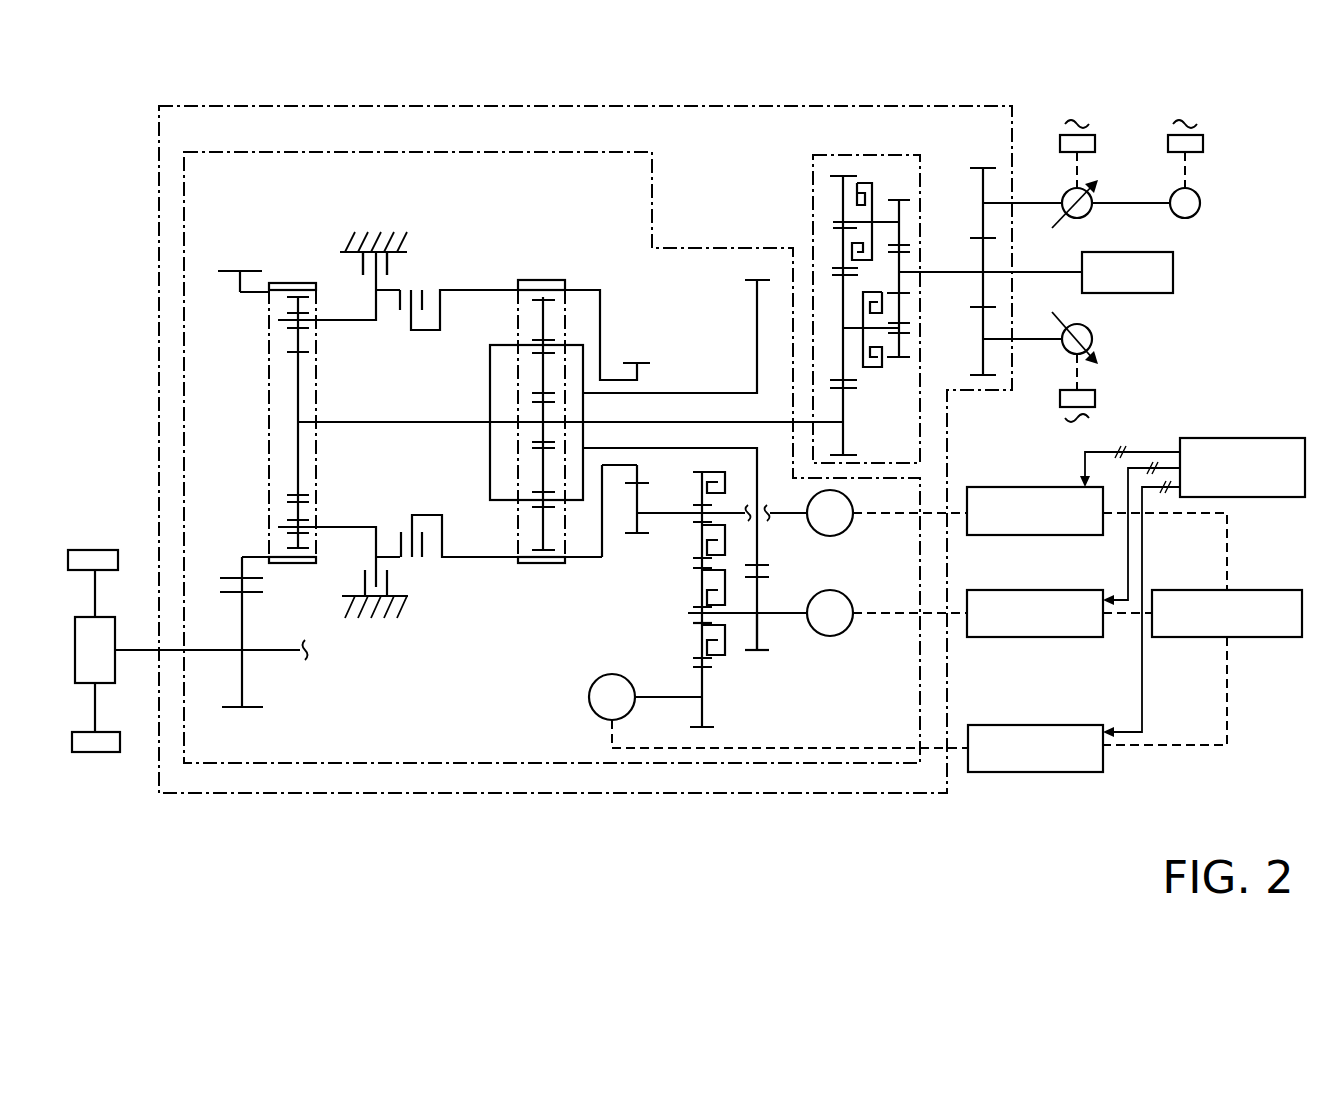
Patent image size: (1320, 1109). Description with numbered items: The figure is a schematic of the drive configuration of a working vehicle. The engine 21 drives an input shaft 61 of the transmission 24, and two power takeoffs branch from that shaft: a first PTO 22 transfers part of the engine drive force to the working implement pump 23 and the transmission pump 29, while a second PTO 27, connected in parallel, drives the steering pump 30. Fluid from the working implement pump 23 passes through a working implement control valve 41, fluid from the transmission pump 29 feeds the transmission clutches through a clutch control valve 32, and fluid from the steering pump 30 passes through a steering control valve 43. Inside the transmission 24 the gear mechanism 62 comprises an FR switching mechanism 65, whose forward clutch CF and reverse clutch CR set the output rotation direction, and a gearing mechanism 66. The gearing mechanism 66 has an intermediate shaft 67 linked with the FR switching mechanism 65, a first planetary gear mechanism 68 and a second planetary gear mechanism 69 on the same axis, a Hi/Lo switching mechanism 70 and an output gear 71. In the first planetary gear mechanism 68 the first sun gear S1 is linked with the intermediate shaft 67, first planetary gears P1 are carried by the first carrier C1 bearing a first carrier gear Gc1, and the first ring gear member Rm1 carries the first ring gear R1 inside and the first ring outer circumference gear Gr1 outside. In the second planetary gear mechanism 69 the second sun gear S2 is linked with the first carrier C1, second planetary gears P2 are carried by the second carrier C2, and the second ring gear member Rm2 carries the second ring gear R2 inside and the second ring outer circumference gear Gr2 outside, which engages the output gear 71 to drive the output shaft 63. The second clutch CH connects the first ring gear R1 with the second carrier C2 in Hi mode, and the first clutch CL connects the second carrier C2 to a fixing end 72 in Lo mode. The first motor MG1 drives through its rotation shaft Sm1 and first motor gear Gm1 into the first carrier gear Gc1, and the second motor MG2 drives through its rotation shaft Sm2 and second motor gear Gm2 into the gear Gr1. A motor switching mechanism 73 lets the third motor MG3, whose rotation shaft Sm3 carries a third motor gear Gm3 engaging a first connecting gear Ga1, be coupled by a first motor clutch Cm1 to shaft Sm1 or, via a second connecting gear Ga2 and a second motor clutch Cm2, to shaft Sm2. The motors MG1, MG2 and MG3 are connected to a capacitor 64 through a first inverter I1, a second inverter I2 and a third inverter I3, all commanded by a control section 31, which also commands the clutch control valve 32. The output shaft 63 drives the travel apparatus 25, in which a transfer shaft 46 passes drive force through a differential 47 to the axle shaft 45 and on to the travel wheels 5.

The travel wheel 5 is at (102, 550).
The engine 21 is at (1160, 293).
The first power takeoff mechanism 22 is at (977, 168).
The working implement pump 23 is at (1090, 210).
The transmission 24 is at (1012, 125).
The travel apparatus 25 is at (168, 621).
The second power takeoff mechanism 27 is at (982, 372).
The transmission pump 29 is at (1195, 215).
The steering pump 30 is at (1090, 348).
The control section 31 is at (1262, 497).
The clutch control valve 32 is at (1203, 142).
The working implement control valve 41 is at (1095, 142).
The steering control valve 43 is at (1095, 397).
The axle shaft 45 is at (97, 587).
The transfer shaft 46 is at (132, 655).
The differential gear 47 is at (75, 653).
The input shaft 61 is at (948, 272).
The gear mechanism 62 is at (810, 295).
The output shaft 63 is at (228, 707).
The capacitor 64 is at (1258, 637).
The FR switching mechanism 65 is at (820, 191).
The gearing mechanism 66 is at (799, 286).
The intermediate shaft 67 is at (782, 426).
The first planetary gear mechanism 68 is at (604, 435).
The second planetary gear mechanism 69 is at (517, 393).
The Hi/Lo switching mechanism 70 is at (501, 359).
The output gear 71 is at (242, 618).
The fixing end 72 is at (395, 218).
The motor switching mechanism 73 is at (722, 668).
The forward clutch CF is at (868, 183).
The reverse clutch CR is at (877, 370).
The first clutch CL is at (387, 275).
The second clutch CH is at (425, 297).
The first ring gear R1 is at (543, 280).
The first planetary gears P1 is at (540, 471).
The first sun gear S1 is at (543, 414).
The first carrier C1 is at (687, 393).
The first ring gear member Rm1 is at (600, 308).
The second ring gear R2 is at (308, 283).
The second planetary gears P2 is at (290, 338).
The second sun gear S2 is at (298, 399).
The second carrier C2 is at (355, 323).
The second ring gear member Rm2 is at (258, 292).
The first ring outer circumference gear Gr1 is at (624, 484).
The second ring outer circumference gear Gr2 is at (230, 574).
The first connecting gear Ga1 is at (698, 628).
The second connecting gear Ga2 is at (707, 470).
The first carrier gear Gc1 is at (768, 568).
The first motor gear Gm1 is at (767, 652).
The second motor gear Gm2 is at (699, 467).
The third motor gear Gm3 is at (700, 683).
The first motor clutch Cm1 is at (702, 649).
The second motor clutch Cm2 is at (700, 547).
The rotation shaft Sm1 is at (787, 615).
The rotation shaft Sm2 is at (783, 516).
The rotation shaft Sm3 is at (650, 700).
The first motor MG1 is at (832, 636).
The second motor MG2 is at (848, 530).
The third motor MG3 is at (589, 697).
The first inverter I1 is at (1040, 590).
The second inverter I2 is at (985, 487).
The third inverter I3 is at (1068, 725).